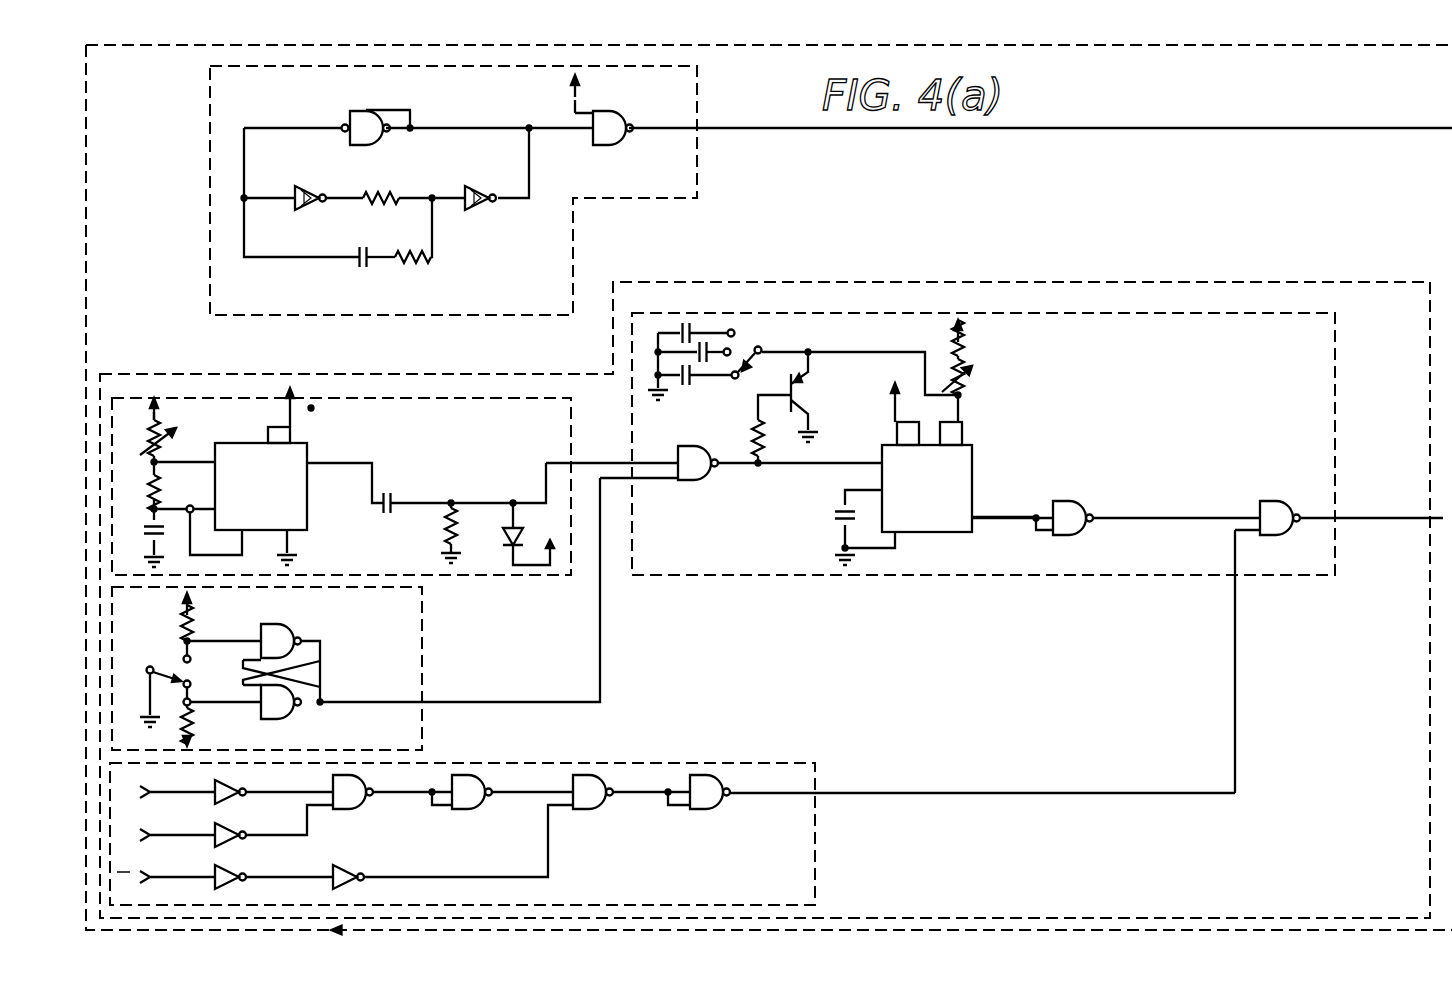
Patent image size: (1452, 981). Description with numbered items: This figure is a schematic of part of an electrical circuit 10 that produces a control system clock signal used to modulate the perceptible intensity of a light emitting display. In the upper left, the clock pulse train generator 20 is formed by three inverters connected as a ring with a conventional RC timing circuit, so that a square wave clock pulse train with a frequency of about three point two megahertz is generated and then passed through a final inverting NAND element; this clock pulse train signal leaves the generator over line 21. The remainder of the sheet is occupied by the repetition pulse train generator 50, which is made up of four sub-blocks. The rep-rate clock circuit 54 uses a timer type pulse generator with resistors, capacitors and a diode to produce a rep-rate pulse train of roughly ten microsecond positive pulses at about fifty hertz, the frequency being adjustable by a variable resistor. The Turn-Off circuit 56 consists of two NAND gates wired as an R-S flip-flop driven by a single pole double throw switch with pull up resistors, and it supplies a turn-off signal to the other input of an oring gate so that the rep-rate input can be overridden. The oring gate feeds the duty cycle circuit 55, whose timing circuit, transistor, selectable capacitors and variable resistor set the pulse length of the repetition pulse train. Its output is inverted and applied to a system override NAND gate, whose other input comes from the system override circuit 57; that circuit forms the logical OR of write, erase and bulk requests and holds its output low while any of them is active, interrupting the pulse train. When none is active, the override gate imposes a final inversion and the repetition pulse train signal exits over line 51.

The electrical circuit 10 is at (1300, 52).
The clock pulse train generator 20 is at (210, 126).
The line 21 is at (1438, 132).
The repetition pulse train generator 50 is at (735, 282).
The line 51 is at (1420, 516).
The rep-rate clock circuit 54 is at (468, 577).
The duty cycle circuit 55 is at (768, 575).
The Turn-Off circuit 56 is at (422, 638).
The system override circuit 57 is at (538, 736).